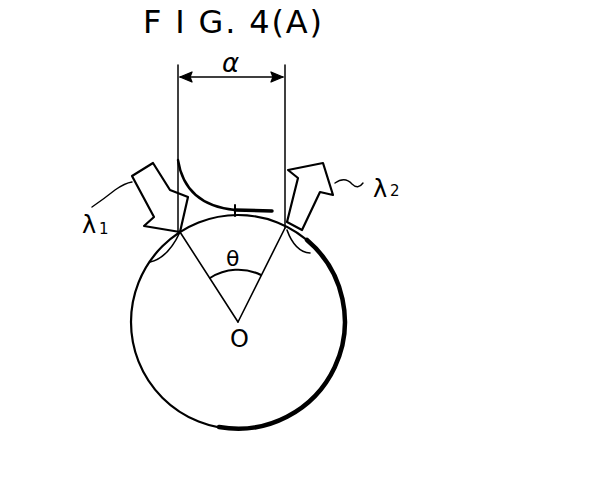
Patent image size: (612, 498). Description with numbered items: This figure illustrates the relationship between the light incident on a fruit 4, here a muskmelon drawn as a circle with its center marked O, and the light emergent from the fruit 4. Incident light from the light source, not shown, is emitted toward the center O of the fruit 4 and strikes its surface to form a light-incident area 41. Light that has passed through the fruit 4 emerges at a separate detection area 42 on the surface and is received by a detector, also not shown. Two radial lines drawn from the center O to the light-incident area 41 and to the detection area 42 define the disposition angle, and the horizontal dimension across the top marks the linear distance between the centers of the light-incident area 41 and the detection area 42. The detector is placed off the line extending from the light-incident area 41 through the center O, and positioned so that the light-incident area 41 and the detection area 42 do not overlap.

The fruit 4 is at (133, 340).
The light-incident area 41 is at (178, 234).
The detection area 42 is at (310, 253).